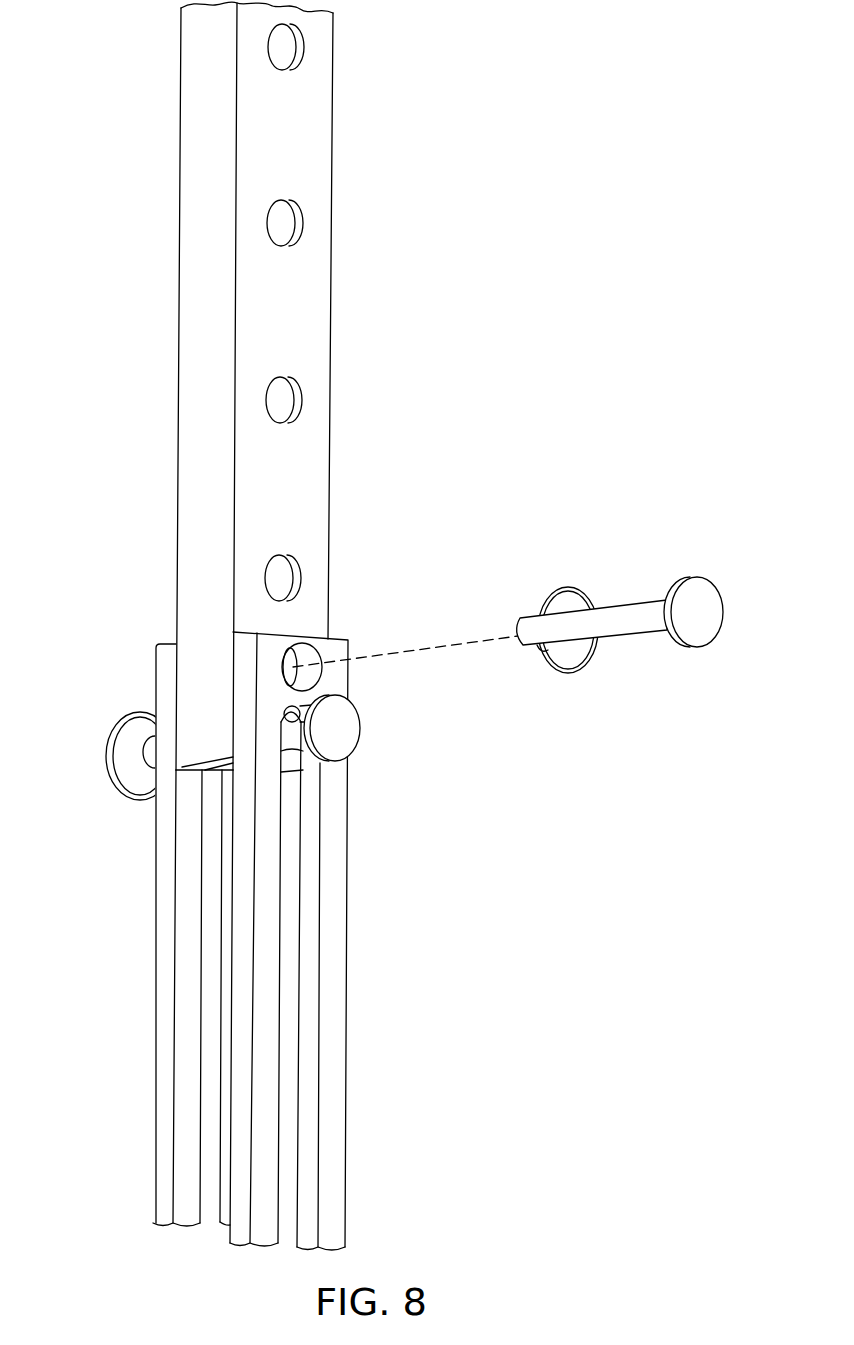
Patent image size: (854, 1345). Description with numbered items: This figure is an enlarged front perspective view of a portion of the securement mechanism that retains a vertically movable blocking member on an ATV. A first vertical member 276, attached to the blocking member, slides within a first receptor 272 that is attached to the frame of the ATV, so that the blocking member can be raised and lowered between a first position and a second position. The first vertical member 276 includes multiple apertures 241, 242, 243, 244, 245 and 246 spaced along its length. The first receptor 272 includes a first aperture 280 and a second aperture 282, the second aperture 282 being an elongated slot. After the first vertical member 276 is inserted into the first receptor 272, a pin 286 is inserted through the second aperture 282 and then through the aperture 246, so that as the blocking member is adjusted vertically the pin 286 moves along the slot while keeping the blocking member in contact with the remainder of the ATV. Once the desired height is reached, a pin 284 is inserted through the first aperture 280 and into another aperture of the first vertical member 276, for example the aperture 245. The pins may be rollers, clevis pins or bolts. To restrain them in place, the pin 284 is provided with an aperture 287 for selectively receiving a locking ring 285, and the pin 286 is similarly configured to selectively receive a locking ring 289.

The aperture 241 is at (304, 47).
The aperture 242 is at (303, 223).
The aperture 243 is at (302, 400).
The aperture 244 is at (301, 578).
The aperture 245 is at (311, 654).
The aperture 246 is at (322, 765).
The first receptor 272 is at (156, 1027).
The first vertical member 276 is at (181, 115).
The first aperture 280 is at (321, 677).
The second aperture 282 is at (347, 838).
The pin 284 is at (623, 612).
The locking ring 285 is at (567, 588).
The pin 286 is at (351, 728).
The aperture 287 is at (540, 651).
The locking ring 289 is at (110, 770).